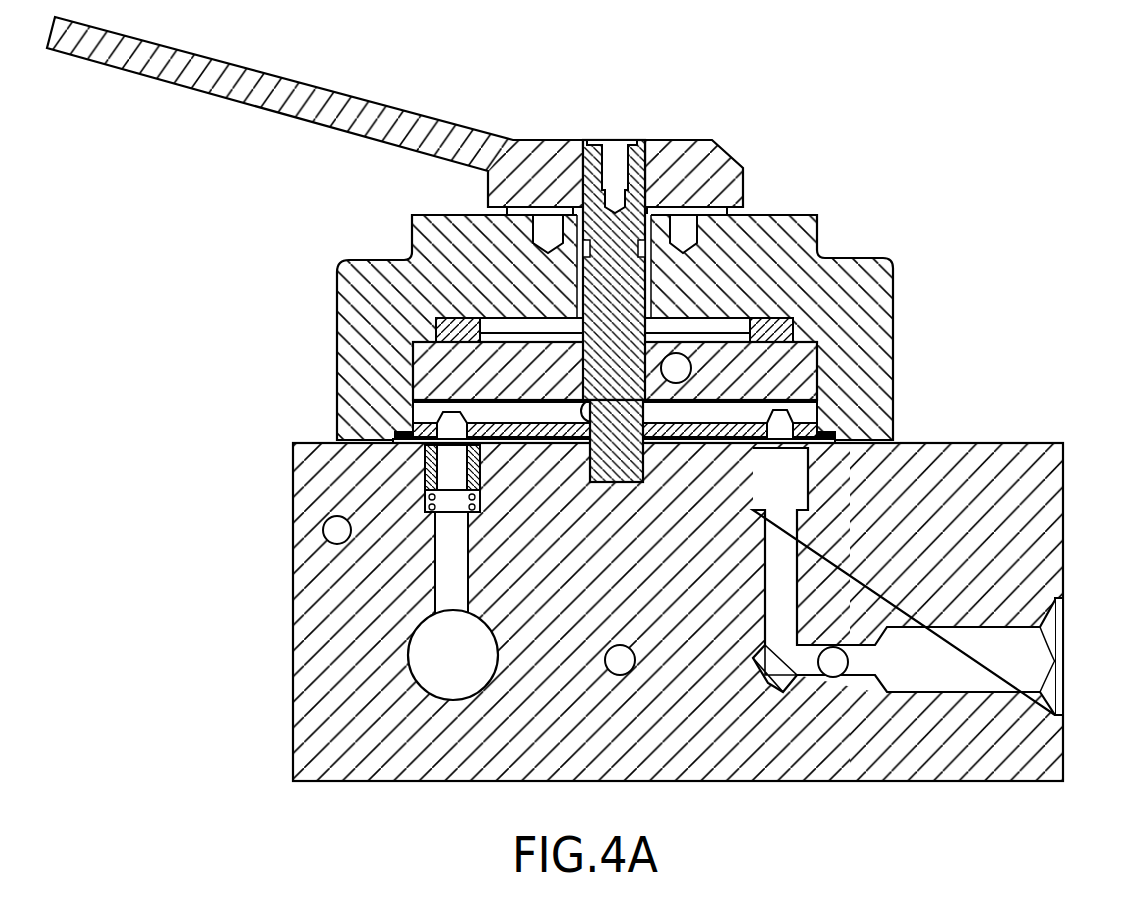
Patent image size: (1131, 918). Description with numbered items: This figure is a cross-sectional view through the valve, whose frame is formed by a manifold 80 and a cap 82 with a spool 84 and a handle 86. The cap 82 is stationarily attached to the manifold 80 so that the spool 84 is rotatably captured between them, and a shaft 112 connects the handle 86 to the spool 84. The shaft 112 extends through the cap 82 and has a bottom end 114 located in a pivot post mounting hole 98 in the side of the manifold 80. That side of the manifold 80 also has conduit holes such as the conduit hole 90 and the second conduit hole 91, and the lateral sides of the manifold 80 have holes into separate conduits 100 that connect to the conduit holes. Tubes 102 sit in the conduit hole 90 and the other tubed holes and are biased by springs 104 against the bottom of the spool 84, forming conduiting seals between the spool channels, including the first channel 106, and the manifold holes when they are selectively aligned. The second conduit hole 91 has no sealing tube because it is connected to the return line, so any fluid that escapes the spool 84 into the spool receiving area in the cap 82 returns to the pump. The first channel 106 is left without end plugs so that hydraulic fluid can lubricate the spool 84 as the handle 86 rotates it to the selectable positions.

The manifold 80 is at (1064, 484).
The cap 82 is at (887, 260).
The spool 84 is at (810, 373).
The handle 86 is at (263, 73).
The conduit hole 90 is at (433, 477).
The second conduit hole 91 is at (792, 483).
The pivot post mounting hole 98 is at (627, 478).
The conduits 100 is at (443, 690).
The tubes 102 is at (423, 457).
The springs 104 is at (433, 517).
The first channel 106 is at (432, 408).
The shaft 112 is at (646, 155).
The bottom end 114 is at (590, 403).